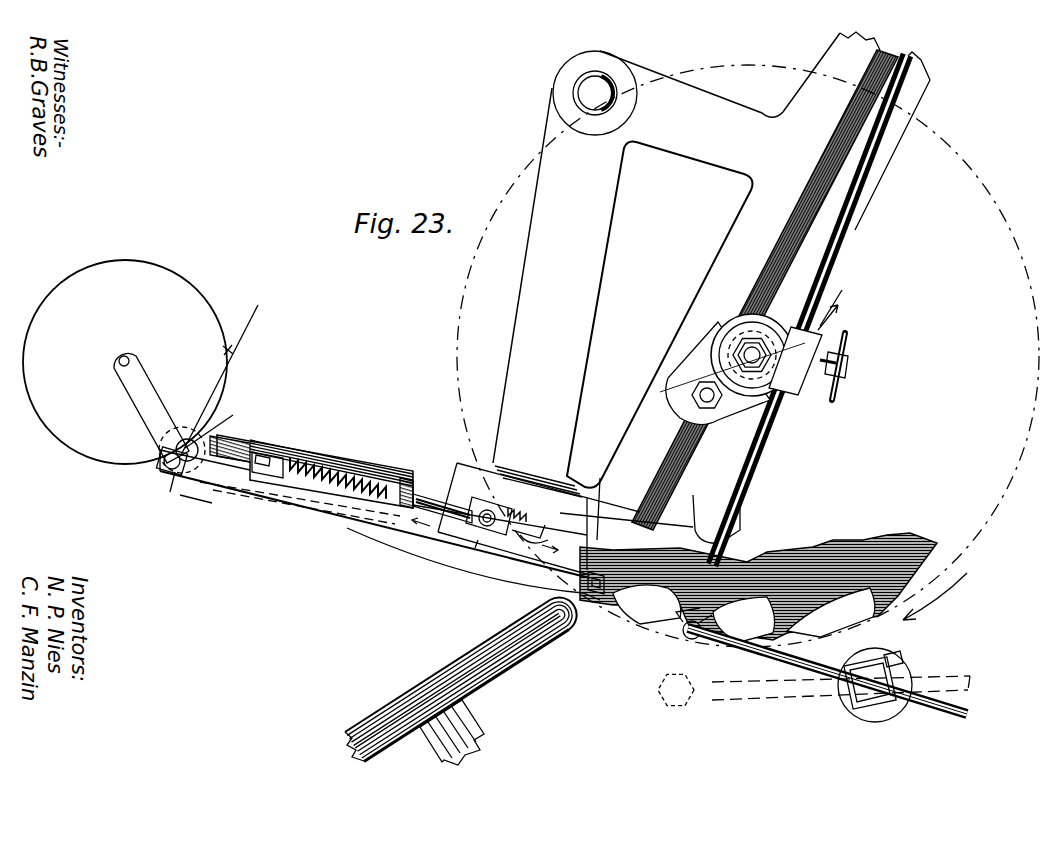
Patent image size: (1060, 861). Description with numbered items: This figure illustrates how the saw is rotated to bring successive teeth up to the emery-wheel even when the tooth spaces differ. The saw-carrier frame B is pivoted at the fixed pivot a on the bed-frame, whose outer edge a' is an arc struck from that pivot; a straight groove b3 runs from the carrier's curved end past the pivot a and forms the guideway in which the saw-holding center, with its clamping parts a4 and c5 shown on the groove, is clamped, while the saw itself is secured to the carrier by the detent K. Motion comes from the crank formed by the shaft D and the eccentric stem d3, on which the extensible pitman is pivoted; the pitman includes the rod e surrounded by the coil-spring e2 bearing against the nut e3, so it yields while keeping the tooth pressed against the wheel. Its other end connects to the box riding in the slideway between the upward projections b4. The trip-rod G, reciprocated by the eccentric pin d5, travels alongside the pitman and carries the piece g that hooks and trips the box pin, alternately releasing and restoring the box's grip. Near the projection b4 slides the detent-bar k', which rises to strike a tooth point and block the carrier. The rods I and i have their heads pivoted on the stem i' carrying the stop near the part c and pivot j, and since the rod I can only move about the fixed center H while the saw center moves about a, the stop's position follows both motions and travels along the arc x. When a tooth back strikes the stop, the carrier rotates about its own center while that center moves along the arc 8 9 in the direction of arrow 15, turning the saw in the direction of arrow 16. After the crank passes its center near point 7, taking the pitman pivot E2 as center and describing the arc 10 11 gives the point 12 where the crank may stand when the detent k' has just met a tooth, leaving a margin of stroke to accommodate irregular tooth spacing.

The point of crank orbit 7 is at (42, 310).
The shaft D is at (159, 414).
The arc end point 11 is at (222, 373).
The crank position point 12 is at (239, 353).
The eccentric stem d3 is at (218, 421).
The eccentric pin d5 is at (165, 489).
The arc end point 10 is at (178, 478).
The pivot of saw-carrier a is at (386, 338).
The nut e3 is at (290, 458).
The coil-spring e2 is at (340, 470).
The pitman rod e is at (442, 503).
The trip-rod G is at (480, 537).
The pivot of the pitman E2 is at (470, 500).
The metal piece g is at (478, 540).
The outer edge of the bed-frame a' is at (514, 558).
The upward projections b4 is at (565, 525).
The detent-bar k' is at (596, 597).
The saw-carrier frame B is at (711, 287).
The straight groove b3 is at (815, 188).
The rod i is at (809, 310).
The clamp a4 is at (744, 369).
The arc end point 9 is at (728, 373).
The clamp screw c5 is at (842, 366).
The arc end point 8 is at (834, 299).
The arrow 15 is at (839, 314).
The rack bar c is at (758, 587).
The pivot j is at (688, 636).
The stem i' is at (686, 638).
The rod I is at (827, 671).
The fixed center H is at (875, 685).
The arc point x is at (690, 640).
The arrow 16 is at (935, 597).
The detent K is at (461, 681).